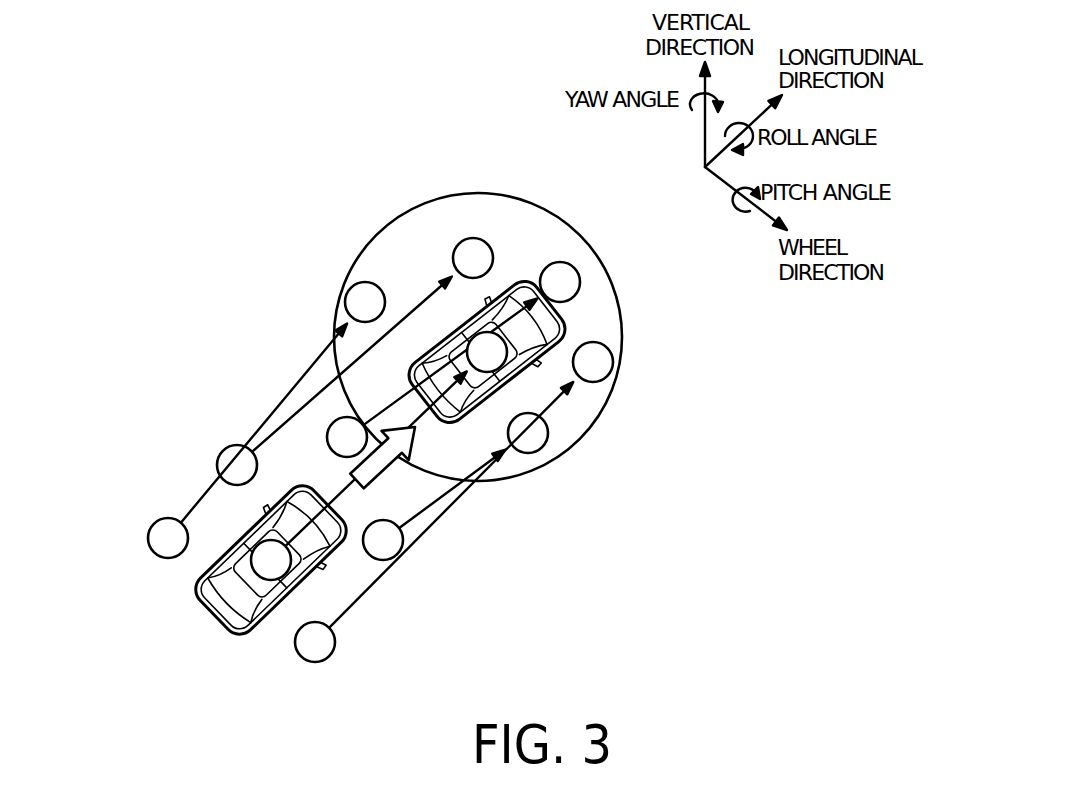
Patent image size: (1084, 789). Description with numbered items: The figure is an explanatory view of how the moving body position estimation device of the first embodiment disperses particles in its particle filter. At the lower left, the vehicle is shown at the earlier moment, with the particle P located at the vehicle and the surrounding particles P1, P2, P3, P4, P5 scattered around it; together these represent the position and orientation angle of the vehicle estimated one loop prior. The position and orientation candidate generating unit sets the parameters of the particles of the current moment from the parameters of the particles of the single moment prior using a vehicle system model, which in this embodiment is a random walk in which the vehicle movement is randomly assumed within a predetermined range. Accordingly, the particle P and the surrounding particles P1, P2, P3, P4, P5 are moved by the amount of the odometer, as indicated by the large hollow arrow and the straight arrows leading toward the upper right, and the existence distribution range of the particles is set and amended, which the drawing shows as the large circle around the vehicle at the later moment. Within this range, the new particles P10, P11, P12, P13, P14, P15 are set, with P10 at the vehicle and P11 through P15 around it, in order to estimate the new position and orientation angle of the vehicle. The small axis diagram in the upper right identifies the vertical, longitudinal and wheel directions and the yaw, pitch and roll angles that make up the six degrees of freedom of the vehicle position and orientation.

The particle P is at (203, 589).
The surrounding particle P1 is at (160, 528).
The surrounding particle P2 is at (227, 453).
The surrounding particle P3 is at (333, 432).
The surrounding particle P4 is at (388, 547).
The surrounding particle P5 is at (330, 638).
The particle P10 is at (497, 348).
The particle P11 is at (352, 302).
The particle P12 is at (460, 255).
The particle P13 is at (560, 275).
The particle P14 is at (600, 362).
The particle P15 is at (535, 437).